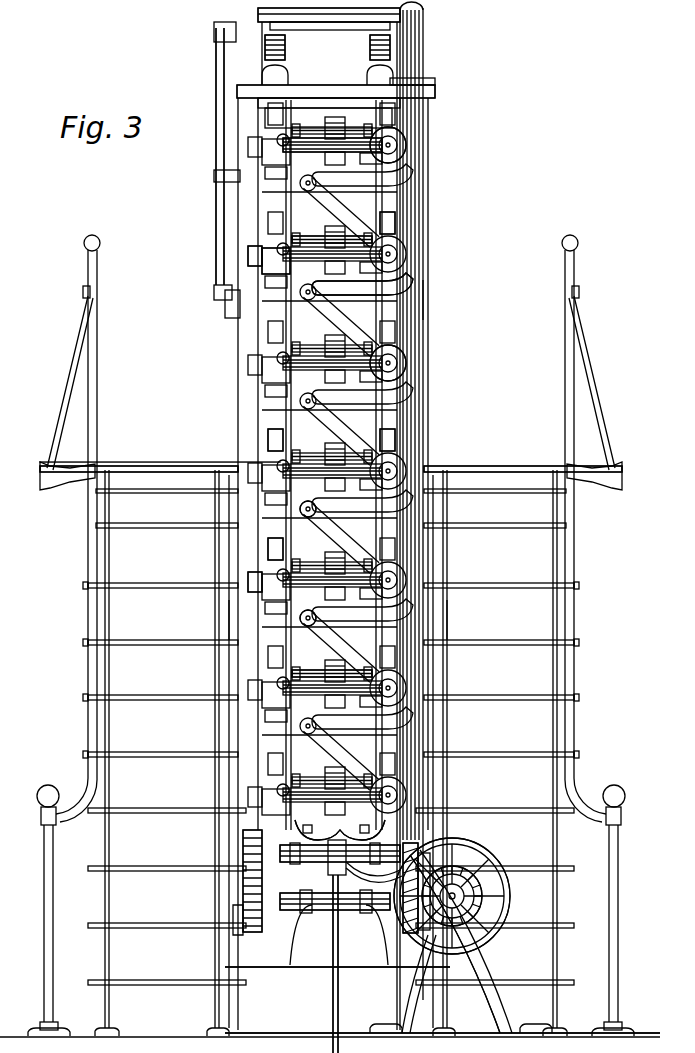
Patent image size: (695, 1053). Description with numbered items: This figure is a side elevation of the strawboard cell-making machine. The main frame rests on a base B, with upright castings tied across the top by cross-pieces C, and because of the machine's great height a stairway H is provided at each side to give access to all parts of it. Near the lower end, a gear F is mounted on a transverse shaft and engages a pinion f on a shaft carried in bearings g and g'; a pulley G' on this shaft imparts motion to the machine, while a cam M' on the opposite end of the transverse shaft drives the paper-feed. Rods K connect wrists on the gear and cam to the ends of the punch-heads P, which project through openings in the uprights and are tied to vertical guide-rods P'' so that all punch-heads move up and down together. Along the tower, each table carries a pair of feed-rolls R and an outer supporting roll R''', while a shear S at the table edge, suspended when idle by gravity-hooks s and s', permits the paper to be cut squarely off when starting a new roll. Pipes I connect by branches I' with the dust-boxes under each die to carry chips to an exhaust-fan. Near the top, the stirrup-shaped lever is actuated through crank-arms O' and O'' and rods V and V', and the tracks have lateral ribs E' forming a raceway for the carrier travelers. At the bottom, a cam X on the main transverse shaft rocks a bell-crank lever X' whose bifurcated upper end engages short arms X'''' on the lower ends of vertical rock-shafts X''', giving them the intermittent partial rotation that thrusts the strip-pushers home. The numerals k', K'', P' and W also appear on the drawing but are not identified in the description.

The crank-arm O'' is at (220, 142).
The top cross bar k' is at (329, 30).
The lateral parallel rib E' is at (327, 53).
The cross-piece C is at (336, 83).
The rod V' is at (210, 89).
The rod V is at (214, 234).
The crank-arm O' is at (217, 180).
The shear S is at (392, 136).
The punch-head P is at (409, 223).
The feed-roll R is at (332, 230).
The roll R''' is at (379, 276).
The pipe I is at (429, 300).
The bearing g' is at (251, 258).
The bearing block K'' is at (274, 273).
The branch I' is at (404, 363).
The vertical guide-rod P'' is at (331, 427).
The stairway H is at (331, 459).
The gravity-hook s is at (313, 504).
The pivot pin s' is at (307, 625).
The bracket P' is at (255, 565).
The rod K is at (326, 620).
The vertical rock-shaft X''' is at (332, 661).
The short arm X'''' is at (372, 830).
The bell-crank lever X' is at (340, 864).
The cam X is at (335, 913).
The vertical rod W is at (344, 905).
The gear F is at (412, 885).
The pulley G' is at (455, 896).
The pinion f is at (468, 893).
The bearing g is at (455, 944).
The cam M' is at (226, 890).
The base B is at (442, 1000).